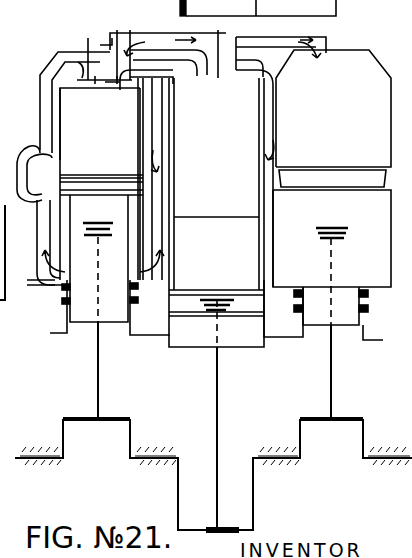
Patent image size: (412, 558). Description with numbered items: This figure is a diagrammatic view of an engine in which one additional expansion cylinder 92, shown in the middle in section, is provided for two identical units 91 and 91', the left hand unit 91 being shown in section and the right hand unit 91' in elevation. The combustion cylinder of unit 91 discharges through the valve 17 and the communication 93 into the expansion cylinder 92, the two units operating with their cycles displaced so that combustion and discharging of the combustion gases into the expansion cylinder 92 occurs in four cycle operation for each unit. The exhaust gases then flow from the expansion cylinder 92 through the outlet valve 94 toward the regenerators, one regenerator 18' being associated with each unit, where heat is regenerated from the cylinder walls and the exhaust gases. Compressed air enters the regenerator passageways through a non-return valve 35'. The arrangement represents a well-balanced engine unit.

The valve 17 is at (118, 72).
The communication 93 is at (186, 72).
The outlet valve 94 is at (205, 36).
The non-return valve 35' is at (281, 11).
The regenerator 18' is at (198, 106).
The expansion cylinder 92 is at (215, 150).
The unit 91 is at (93, 253).
The unit 91' is at (327, 251).